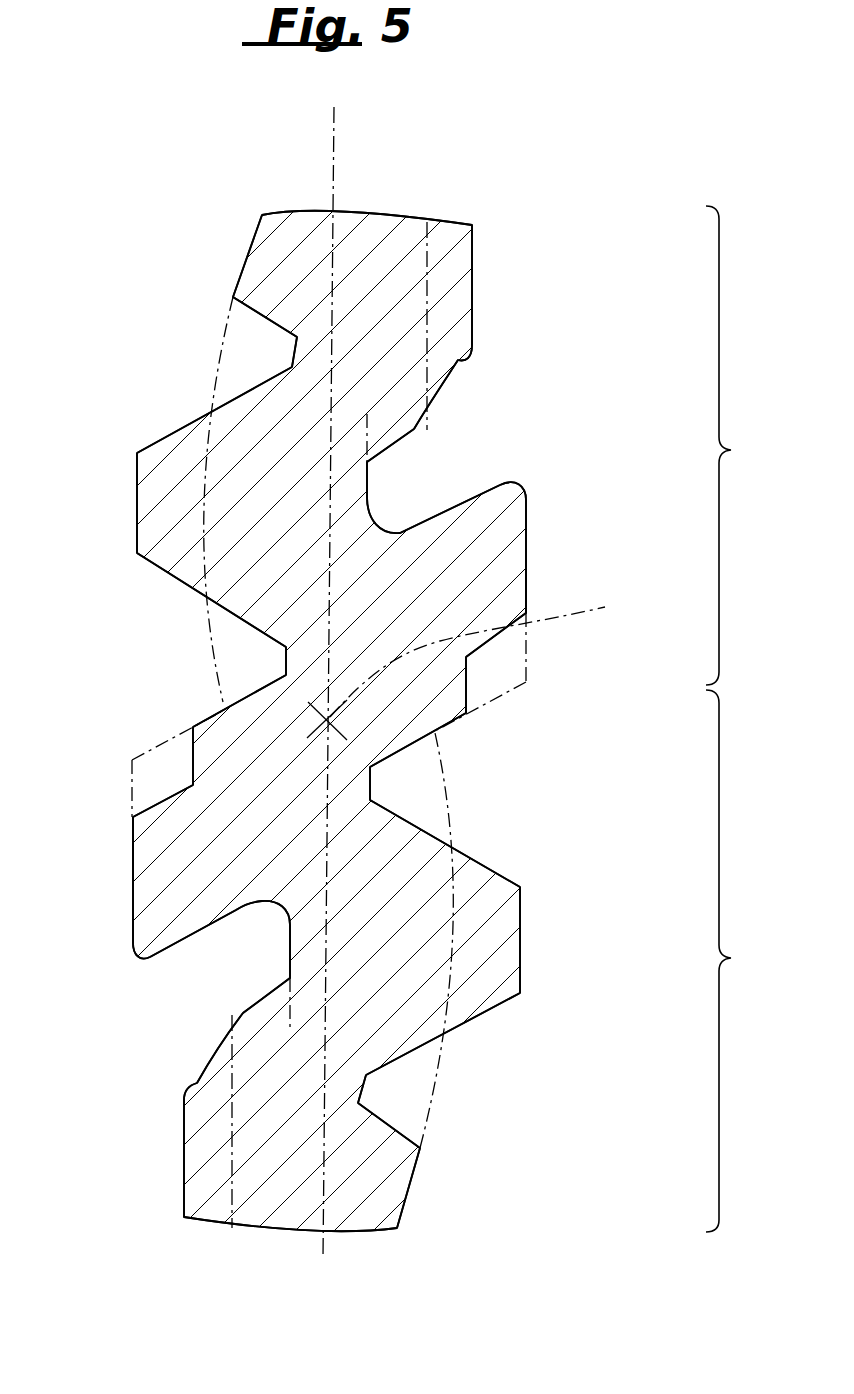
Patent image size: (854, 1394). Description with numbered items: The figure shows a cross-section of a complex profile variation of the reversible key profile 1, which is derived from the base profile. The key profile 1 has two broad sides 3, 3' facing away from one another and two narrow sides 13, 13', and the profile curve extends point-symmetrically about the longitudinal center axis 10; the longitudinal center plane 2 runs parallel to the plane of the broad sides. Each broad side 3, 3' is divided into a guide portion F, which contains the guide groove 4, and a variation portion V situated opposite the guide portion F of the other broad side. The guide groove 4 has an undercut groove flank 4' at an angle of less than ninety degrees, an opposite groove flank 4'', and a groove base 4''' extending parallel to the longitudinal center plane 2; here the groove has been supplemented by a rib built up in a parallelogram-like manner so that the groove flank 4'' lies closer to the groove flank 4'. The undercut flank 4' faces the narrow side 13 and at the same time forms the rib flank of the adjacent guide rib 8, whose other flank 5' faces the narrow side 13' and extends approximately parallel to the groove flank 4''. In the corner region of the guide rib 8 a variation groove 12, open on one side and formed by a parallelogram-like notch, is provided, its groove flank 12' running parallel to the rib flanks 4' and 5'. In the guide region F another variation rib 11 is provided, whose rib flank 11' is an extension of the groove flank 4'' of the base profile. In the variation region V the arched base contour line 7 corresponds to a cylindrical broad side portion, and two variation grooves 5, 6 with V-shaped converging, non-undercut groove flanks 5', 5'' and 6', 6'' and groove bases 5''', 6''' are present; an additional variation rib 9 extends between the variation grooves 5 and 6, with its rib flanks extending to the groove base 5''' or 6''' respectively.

The key profile 1 is at (370, 202).
The longitudinal center plane 2 is at (330, 148).
The broad side 3 is at (564, 547).
The broad side 3' is at (97, 888).
The guide groove 4 is at (323, 715).
The groove flank 4' is at (324, 715).
The groove flank 4'' is at (330, 714).
The groove base 4''' is at (327, 720).
The variation groove 5 is at (325, 722).
The groove flank 5' is at (332, 721).
The groove flank 5'' is at (331, 720).
The groove base 5''' is at (328, 716).
The variation groove 6 is at (324, 721).
The groove flank 6' is at (326, 721).
The groove flank 6'' is at (328, 715).
The groove base 6''' is at (335, 720).
The arched base contour line 7 is at (450, 995).
The guide rib 8 is at (532, 585).
The variation rib 9 is at (497, 932).
The longitudinal center axis 10 is at (477, 663).
The variation rib 11 is at (331, 723).
The rib flank 11' is at (326, 725).
The variation groove 12 is at (323, 721).
The groove flank 12' is at (347, 715).
The narrow side 13 is at (328, 175).
The narrow side 13' is at (290, 1269).
The guide portion F is at (733, 445).
The variation portion V is at (734, 961).